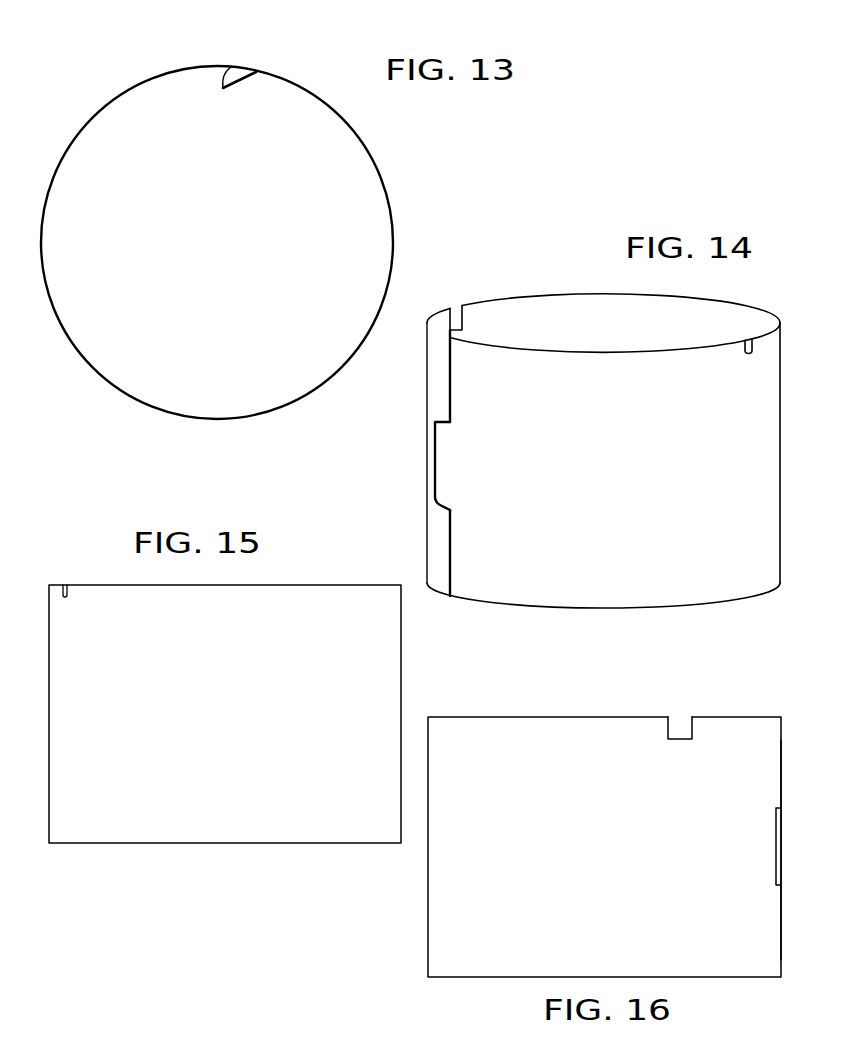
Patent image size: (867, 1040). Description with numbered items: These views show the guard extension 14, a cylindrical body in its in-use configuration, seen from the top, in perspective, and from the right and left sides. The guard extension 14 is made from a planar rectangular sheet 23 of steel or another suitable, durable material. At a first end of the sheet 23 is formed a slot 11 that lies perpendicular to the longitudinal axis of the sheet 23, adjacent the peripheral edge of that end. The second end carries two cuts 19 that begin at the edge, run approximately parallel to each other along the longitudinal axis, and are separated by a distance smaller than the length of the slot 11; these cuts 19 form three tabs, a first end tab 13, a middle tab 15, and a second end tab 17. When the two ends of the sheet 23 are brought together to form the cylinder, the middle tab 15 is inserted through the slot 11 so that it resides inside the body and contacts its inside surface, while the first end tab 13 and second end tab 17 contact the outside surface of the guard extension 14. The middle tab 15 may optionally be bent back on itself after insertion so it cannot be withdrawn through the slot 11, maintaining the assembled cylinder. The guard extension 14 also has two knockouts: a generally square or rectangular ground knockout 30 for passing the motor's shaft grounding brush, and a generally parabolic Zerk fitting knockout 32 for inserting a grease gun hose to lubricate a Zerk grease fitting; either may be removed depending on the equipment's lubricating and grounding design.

In FIG. 13, the guard extension 14 is at (79, 89).
In FIG. 14, the guard extension 14 is at (533, 255).
In FIG. 13, the middle tab 15 is at (233, 68).
In FIG. 16, the middle tab 15 is at (781, 866).
In FIG. 14, the first end tab 13 is at (450, 387).
In FIG. 14, the cuts 19 is at (450, 427).
In FIG. 14, the second end tab 17 is at (450, 550).
In FIG. 15, the rectangular sheet 23 is at (224, 843).
In FIG. 16, the rectangular sheet 23 is at (495, 978).
In FIG. 15, the Zerk fitting knockout 32 is at (64, 585).
In FIG. 16, the ground knockout 30 is at (677, 728).
In FIG. 16, the slot 11 is at (777, 843).